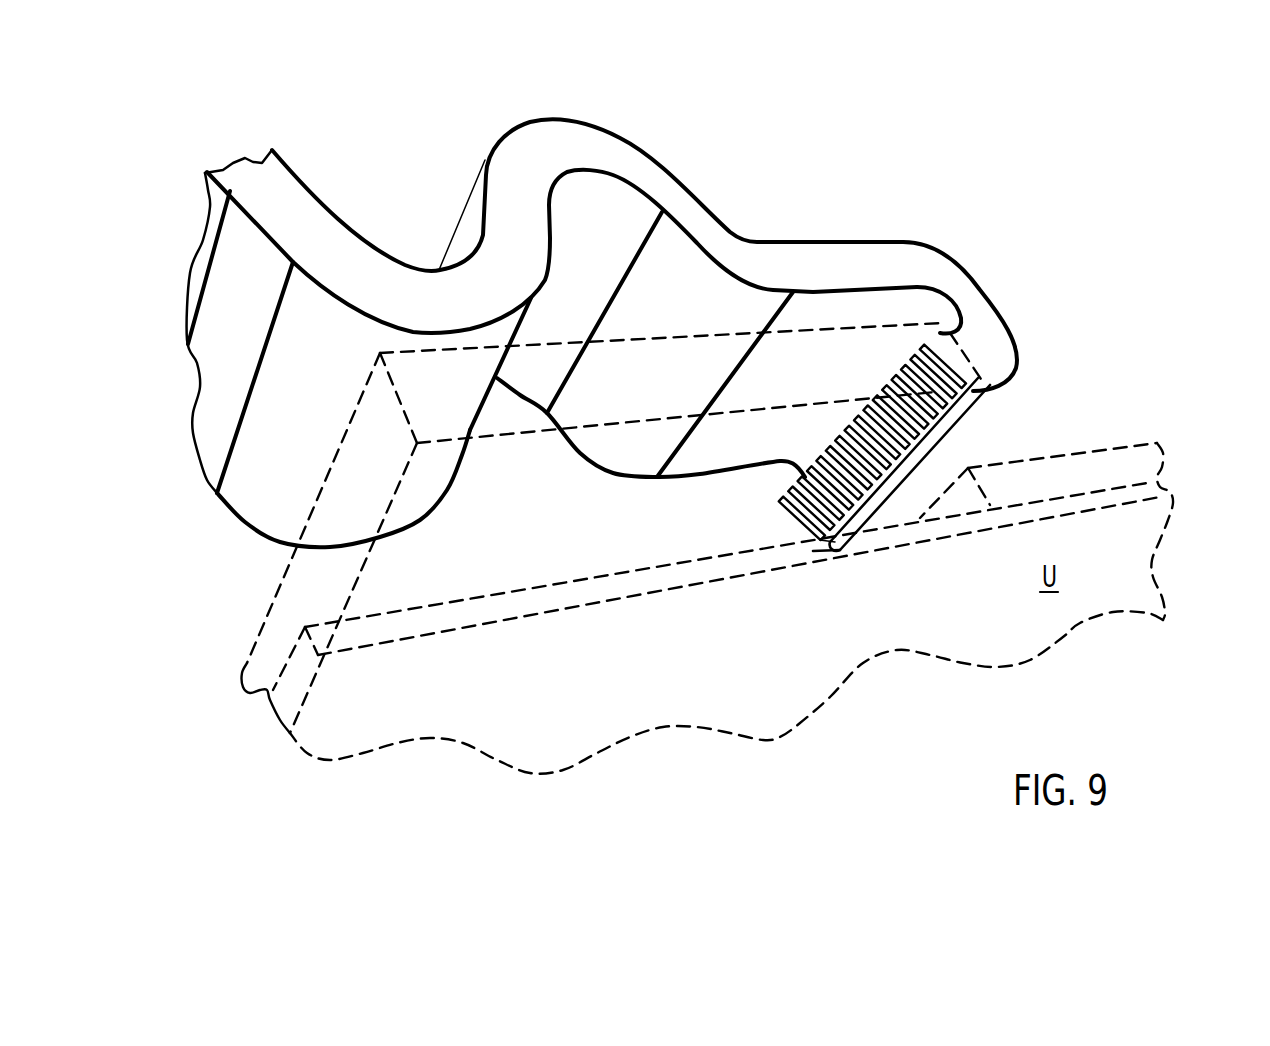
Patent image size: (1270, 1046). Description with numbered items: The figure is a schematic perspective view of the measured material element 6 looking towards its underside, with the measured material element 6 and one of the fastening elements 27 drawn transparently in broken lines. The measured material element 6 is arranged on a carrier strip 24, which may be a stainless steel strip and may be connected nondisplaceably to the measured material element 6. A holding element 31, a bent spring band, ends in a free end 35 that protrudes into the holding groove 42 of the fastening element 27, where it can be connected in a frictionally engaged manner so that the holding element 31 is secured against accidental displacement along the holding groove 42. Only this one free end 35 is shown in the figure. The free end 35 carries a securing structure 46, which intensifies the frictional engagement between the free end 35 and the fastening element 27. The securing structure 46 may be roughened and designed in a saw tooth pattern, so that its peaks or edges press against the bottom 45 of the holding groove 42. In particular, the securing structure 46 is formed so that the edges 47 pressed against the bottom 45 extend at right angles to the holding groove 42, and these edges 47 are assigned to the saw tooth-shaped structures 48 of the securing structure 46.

The measured material element 6 is at (1142, 442).
The carrier strip 24 is at (1150, 483).
The fastening element 27 is at (289, 571).
The holding element 31 is at (747, 234).
The free end 35 is at (1013, 341).
The holding groove 42 is at (1040, 386).
The bottom of the holding groove 45 is at (910, 352).
The securing structure 46 is at (780, 517).
The edges 47 is at (840, 553).
The saw tooth-shaped structures 48 is at (880, 492).